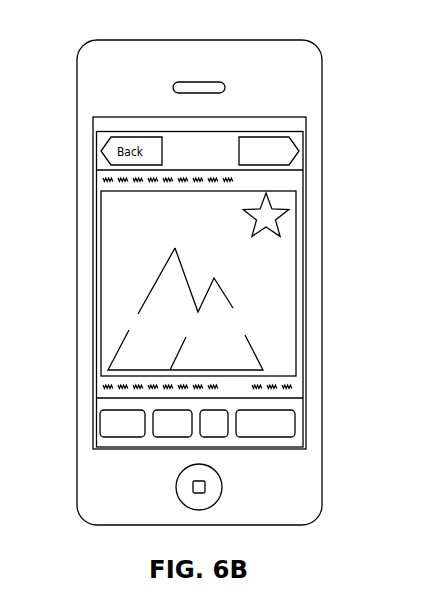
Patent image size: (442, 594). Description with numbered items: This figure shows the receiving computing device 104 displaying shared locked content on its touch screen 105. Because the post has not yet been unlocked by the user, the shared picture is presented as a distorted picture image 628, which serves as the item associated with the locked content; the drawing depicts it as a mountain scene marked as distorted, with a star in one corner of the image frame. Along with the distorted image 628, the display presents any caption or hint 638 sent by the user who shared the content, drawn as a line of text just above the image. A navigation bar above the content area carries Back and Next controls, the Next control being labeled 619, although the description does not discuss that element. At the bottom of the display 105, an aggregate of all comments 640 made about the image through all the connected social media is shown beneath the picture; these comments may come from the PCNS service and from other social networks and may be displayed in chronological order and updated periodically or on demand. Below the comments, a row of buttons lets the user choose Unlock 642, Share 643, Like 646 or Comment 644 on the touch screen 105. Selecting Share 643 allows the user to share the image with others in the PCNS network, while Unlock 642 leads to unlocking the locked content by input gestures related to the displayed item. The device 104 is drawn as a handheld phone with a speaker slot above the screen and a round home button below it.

The computing device 104 is at (300, 41).
The touch screen 105 is at (299, 336).
The next button 619 is at (299, 151).
The caption or hint 638 is at (242, 180).
The distorted picture image 628 is at (280, 252).
The aggregate of all comments 640 is at (100, 388).
The Unlock 642 is at (100, 423).
The Share 643 is at (172, 437).
The Like 646 is at (214, 437).
The Comment 644 is at (296, 423).